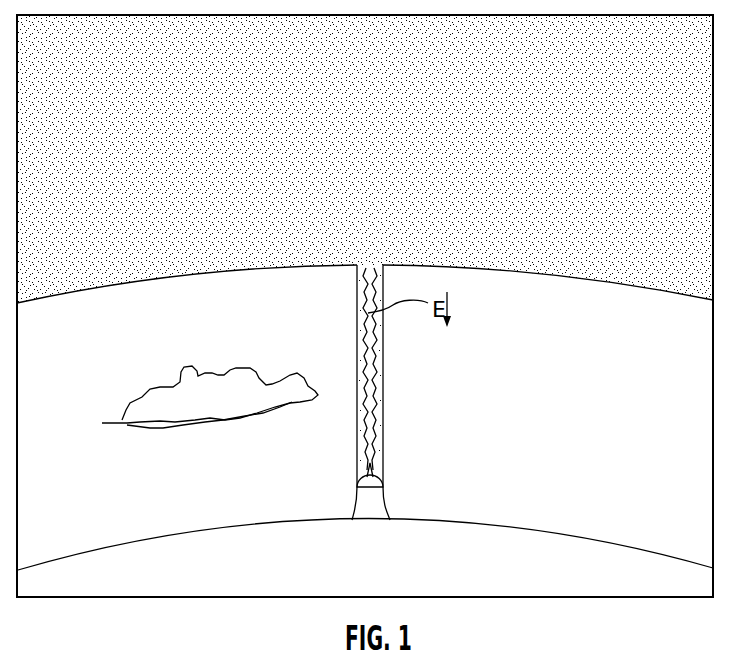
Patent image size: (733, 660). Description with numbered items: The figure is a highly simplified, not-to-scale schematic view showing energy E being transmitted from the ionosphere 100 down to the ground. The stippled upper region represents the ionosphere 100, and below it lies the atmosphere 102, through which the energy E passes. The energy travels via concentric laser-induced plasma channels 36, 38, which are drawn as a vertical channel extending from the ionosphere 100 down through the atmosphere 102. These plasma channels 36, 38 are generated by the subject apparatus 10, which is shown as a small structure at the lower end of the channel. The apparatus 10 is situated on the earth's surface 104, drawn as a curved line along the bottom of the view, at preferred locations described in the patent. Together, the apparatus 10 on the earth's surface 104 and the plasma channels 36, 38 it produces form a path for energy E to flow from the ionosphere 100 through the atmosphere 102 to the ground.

The ionosphere 100 is at (386, 146).
The atmosphere 102 is at (568, 411).
The earth's surface 104 is at (536, 524).
The apparatus 10 is at (401, 491).
The plasma channel 36 is at (413, 376).
The plasma channel 38 is at (383, 429).